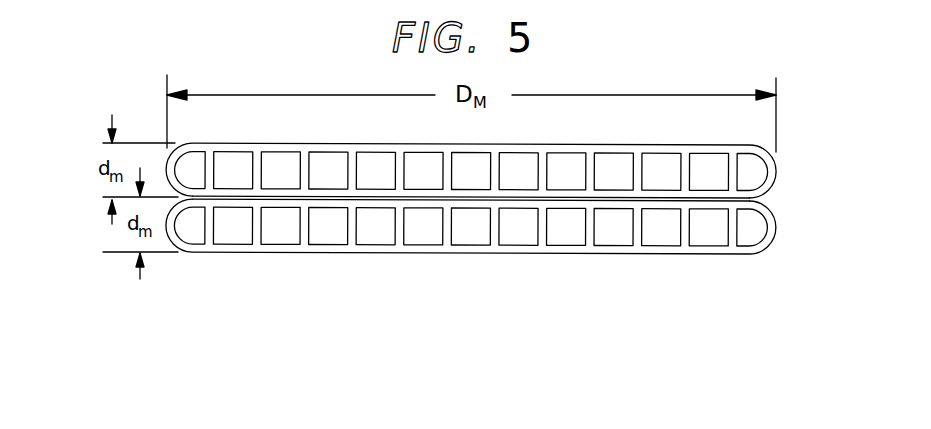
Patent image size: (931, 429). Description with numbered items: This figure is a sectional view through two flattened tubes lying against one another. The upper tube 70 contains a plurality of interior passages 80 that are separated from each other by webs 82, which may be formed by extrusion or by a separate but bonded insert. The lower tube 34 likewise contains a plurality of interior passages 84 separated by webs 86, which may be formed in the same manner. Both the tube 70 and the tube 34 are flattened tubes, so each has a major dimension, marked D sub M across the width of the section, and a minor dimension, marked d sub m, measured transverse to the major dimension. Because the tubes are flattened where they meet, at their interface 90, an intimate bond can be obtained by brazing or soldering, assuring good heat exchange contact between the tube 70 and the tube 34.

The tube 34 is at (425, 254).
The tube 70 is at (557, 152).
The interior passages 80 is at (232, 166).
The webs 82 is at (358, 168).
The interior passages 84 is at (287, 232).
The webs 86 is at (395, 231).
The interface 90 is at (598, 198).